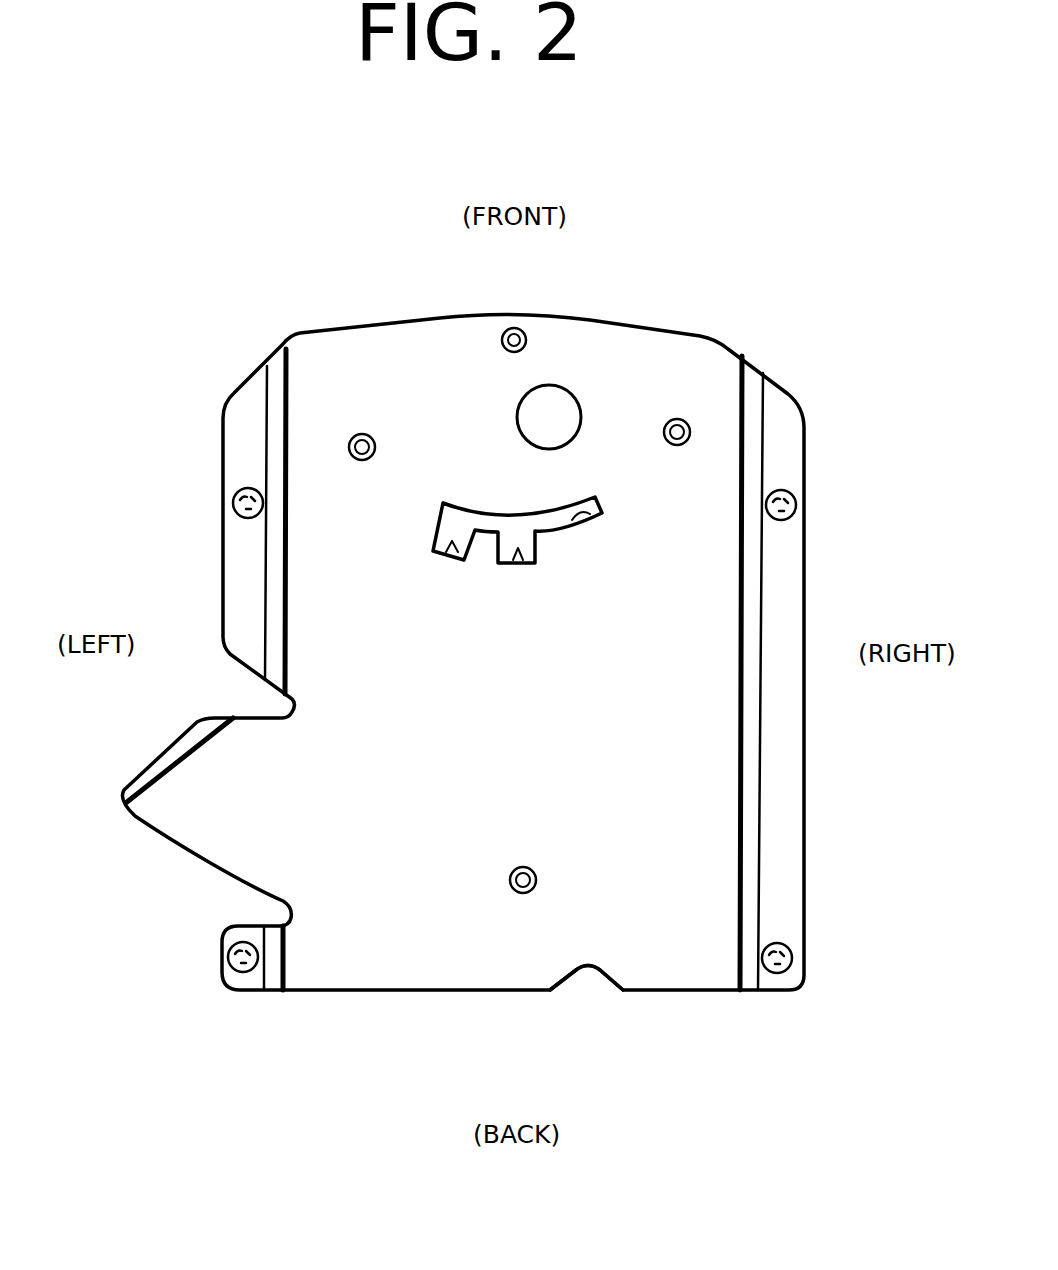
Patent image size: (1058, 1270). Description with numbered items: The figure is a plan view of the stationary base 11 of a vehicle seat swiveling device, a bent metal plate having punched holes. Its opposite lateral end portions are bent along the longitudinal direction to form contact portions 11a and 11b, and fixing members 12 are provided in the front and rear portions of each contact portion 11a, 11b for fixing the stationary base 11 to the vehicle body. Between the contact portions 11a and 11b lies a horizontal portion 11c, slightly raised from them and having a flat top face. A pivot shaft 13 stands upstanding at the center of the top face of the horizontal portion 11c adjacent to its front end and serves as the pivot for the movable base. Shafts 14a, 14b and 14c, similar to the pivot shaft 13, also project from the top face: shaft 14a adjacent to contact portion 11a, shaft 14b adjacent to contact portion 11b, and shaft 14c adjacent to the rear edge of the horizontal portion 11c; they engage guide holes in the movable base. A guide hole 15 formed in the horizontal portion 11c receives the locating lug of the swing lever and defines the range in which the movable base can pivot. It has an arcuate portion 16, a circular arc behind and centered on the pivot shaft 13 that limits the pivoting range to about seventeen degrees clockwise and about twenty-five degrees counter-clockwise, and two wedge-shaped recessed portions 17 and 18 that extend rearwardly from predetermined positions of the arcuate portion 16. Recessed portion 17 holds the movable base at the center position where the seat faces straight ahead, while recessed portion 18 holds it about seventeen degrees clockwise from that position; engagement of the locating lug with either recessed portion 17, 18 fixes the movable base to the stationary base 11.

The stationary base 11 is at (403, 992).
The contact portion 11a is at (250, 457).
The contact portion 11b is at (785, 706).
The horizontal portion 11c is at (660, 935).
The fixing member 12 is at (845, 958).
The pivot shaft 13 is at (518, 328).
The shaft 14a is at (362, 434).
The shaft 14b is at (677, 419).
The shaft 14c is at (521, 893).
The guide hole 15 is at (515, 460).
The arcuate portion 16 is at (590, 518).
The recessed portion 17 is at (522, 565).
The recessed portion 18 is at (445, 555).